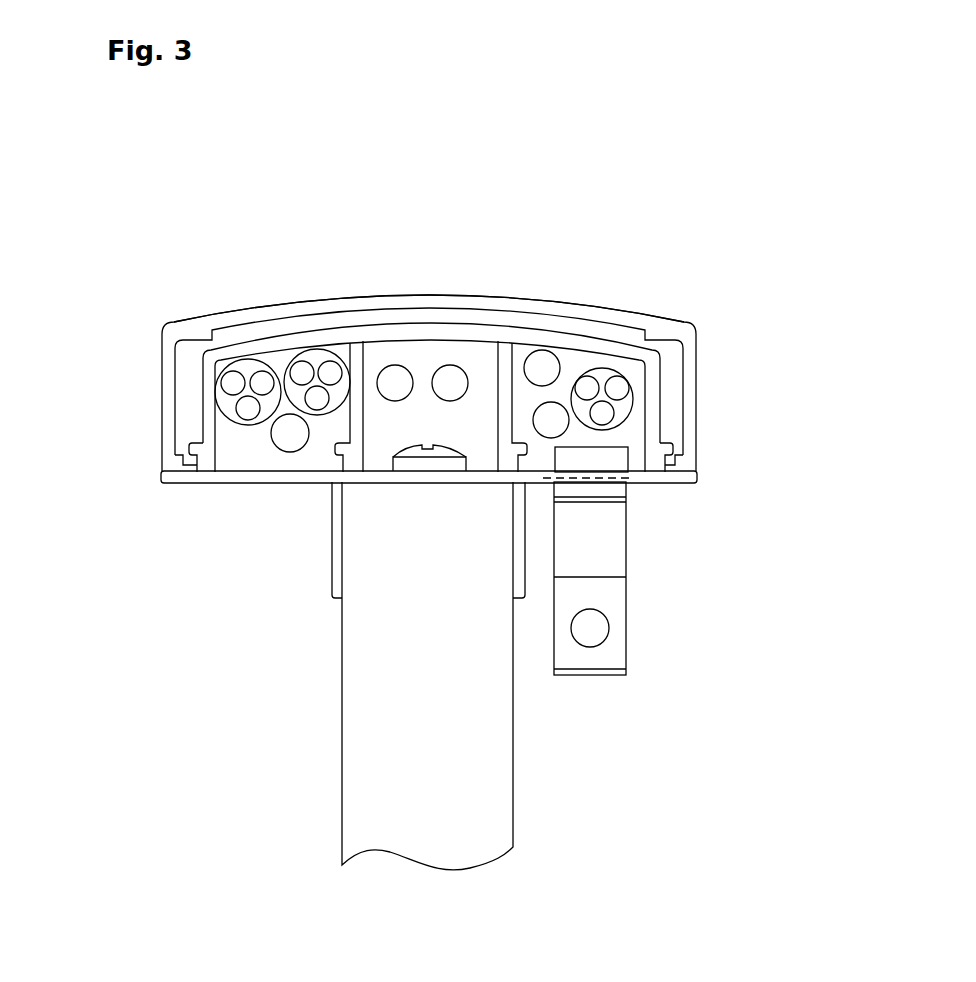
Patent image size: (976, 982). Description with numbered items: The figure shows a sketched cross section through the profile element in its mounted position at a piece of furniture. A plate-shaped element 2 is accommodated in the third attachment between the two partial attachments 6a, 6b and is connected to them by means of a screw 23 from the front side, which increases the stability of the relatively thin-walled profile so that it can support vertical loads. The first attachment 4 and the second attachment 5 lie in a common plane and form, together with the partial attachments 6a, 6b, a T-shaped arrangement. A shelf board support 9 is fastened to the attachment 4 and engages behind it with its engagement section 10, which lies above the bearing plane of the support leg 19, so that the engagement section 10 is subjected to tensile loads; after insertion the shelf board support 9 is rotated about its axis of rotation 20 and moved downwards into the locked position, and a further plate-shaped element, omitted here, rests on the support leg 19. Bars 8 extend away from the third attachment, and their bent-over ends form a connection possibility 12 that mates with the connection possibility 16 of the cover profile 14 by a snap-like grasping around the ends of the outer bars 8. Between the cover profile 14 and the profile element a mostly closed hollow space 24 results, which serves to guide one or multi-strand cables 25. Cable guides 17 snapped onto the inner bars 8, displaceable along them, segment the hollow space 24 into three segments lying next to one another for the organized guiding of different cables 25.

The plate-shaped element 2 is at (382, 655).
The first flat attachment 4 is at (653, 483).
The second flat attachment 5 is at (233, 478).
The partial attachment 6a is at (519, 582).
The partial attachment 6b is at (335, 583).
The bars 8 is at (337, 447).
The shelf board support 9 is at (598, 553).
The engagement section 10 is at (603, 463).
The connection possibility 12 is at (663, 445).
The cover profile 14 is at (653, 325).
The connection possibility 16 is at (687, 464).
The cable guides 17 is at (498, 333).
The support leg 19 is at (703, 580).
The axis of rotation 20 is at (607, 479).
The screw 23 is at (420, 459).
The hollow space 24 is at (403, 352).
The cables 25 is at (248, 370).